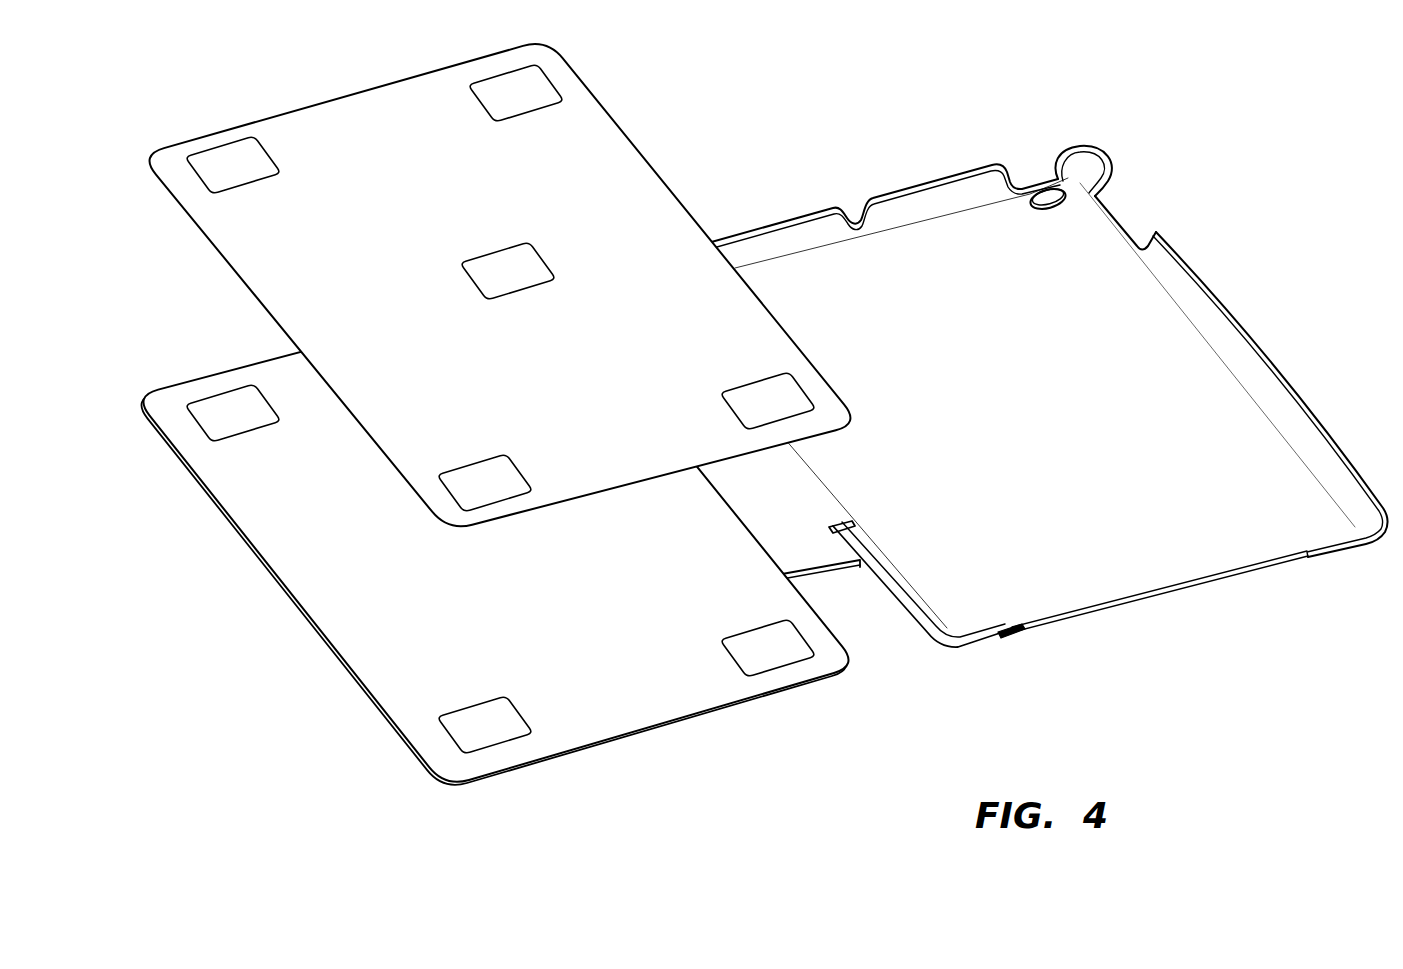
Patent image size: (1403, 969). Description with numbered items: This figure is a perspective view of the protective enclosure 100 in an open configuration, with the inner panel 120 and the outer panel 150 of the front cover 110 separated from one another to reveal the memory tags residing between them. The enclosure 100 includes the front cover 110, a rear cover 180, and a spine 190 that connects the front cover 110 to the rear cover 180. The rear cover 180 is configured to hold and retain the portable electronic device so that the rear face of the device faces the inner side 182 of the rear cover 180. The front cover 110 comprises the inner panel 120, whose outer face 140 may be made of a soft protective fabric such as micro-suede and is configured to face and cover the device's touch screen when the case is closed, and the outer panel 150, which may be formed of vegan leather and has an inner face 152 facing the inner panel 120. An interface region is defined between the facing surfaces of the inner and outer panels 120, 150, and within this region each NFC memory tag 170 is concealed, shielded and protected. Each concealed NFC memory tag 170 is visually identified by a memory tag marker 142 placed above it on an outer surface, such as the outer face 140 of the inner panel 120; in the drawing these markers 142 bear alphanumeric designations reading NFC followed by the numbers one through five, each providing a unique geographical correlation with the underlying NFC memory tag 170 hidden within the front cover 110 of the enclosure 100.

The protective enclosure 100 is at (720, 425).
The front cover 110 is at (460, 425).
The inner panel 120 is at (500, 285).
The outer face 140 is at (552, 153).
The memory tag marker 142 is at (233, 128).
The outer panel 150 is at (504, 549).
The inner face 152 is at (420, 693).
The NFC memory tag 170 is at (203, 400).
The rear cover 180 is at (1039, 392).
The inner side 182 is at (1140, 556).
The spine 190 is at (831, 575).